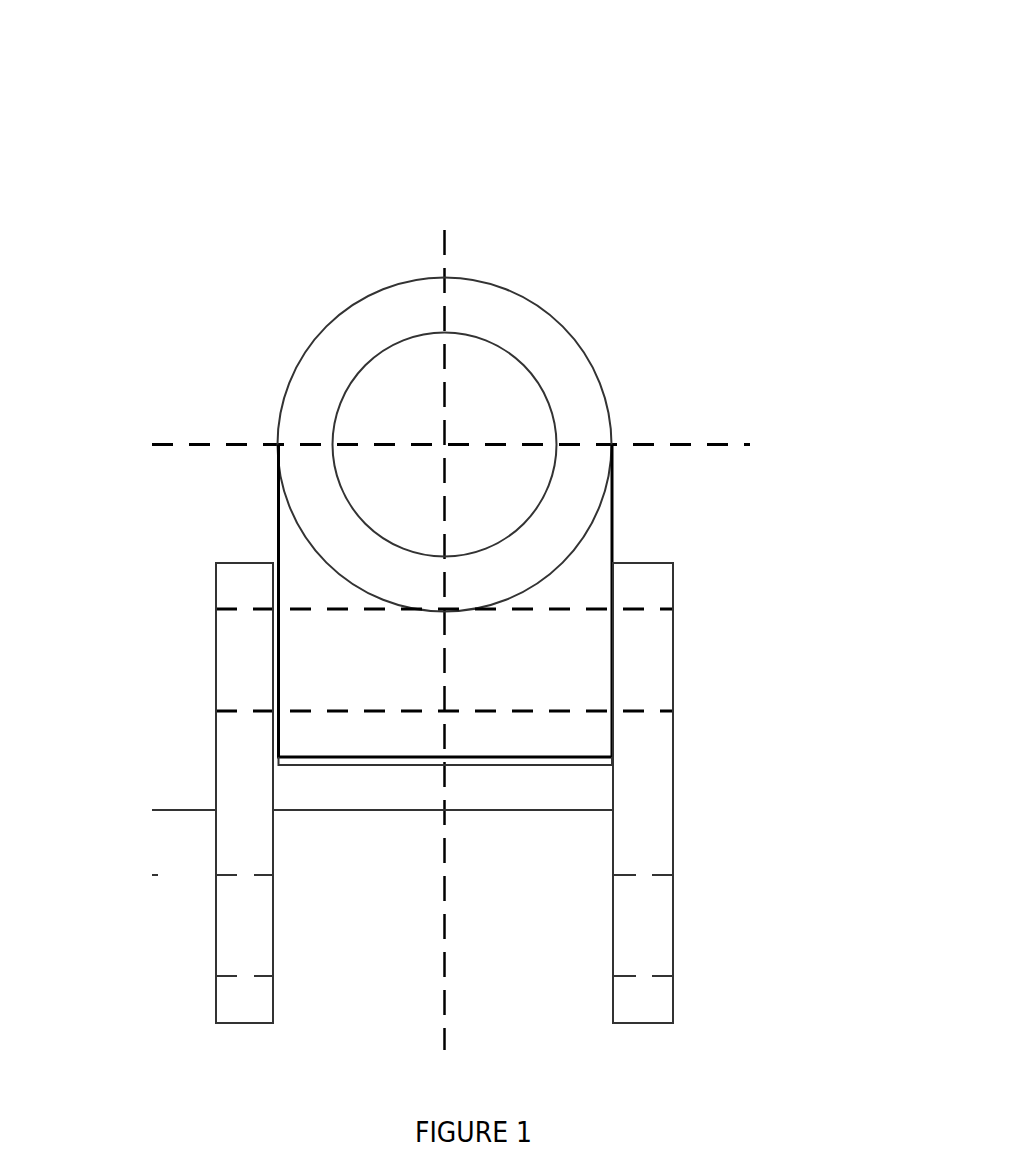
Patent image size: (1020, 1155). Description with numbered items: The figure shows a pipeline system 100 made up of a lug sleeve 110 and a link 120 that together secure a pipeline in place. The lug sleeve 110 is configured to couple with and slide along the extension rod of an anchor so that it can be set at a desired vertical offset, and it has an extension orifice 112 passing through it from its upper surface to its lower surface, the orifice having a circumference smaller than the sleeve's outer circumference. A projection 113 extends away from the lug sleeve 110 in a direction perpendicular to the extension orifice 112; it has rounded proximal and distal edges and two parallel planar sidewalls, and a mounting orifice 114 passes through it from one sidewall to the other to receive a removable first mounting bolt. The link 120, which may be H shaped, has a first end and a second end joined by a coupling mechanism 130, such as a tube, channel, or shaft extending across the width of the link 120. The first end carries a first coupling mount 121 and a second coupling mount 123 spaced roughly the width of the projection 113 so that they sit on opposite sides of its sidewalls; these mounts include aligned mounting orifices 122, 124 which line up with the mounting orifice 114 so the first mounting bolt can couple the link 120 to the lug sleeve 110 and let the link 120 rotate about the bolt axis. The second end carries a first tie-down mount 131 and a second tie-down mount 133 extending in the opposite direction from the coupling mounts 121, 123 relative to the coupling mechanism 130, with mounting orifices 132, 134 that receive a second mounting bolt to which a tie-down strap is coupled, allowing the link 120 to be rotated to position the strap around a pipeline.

The pipeline system 100 is at (140, 115).
The lug sleeve 110 is at (537, 352).
The extension orifice 112 is at (392, 417).
The projection 113 is at (313, 578).
The mounting orifice 114 is at (560, 640).
The link 120 is at (665, 800).
The first coupling mount 121 is at (633, 575).
The mounting orifice 122 is at (649, 672).
The second coupling mount 123 is at (247, 583).
The mounting orifice 124 is at (232, 672).
The coupling mechanism 130 is at (392, 783).
The first tie-down mount 131 is at (633, 848).
The mounting orifice 132 is at (633, 947).
The second tie-down mount 133 is at (232, 832).
The mounting orifice 134 is at (248, 929).